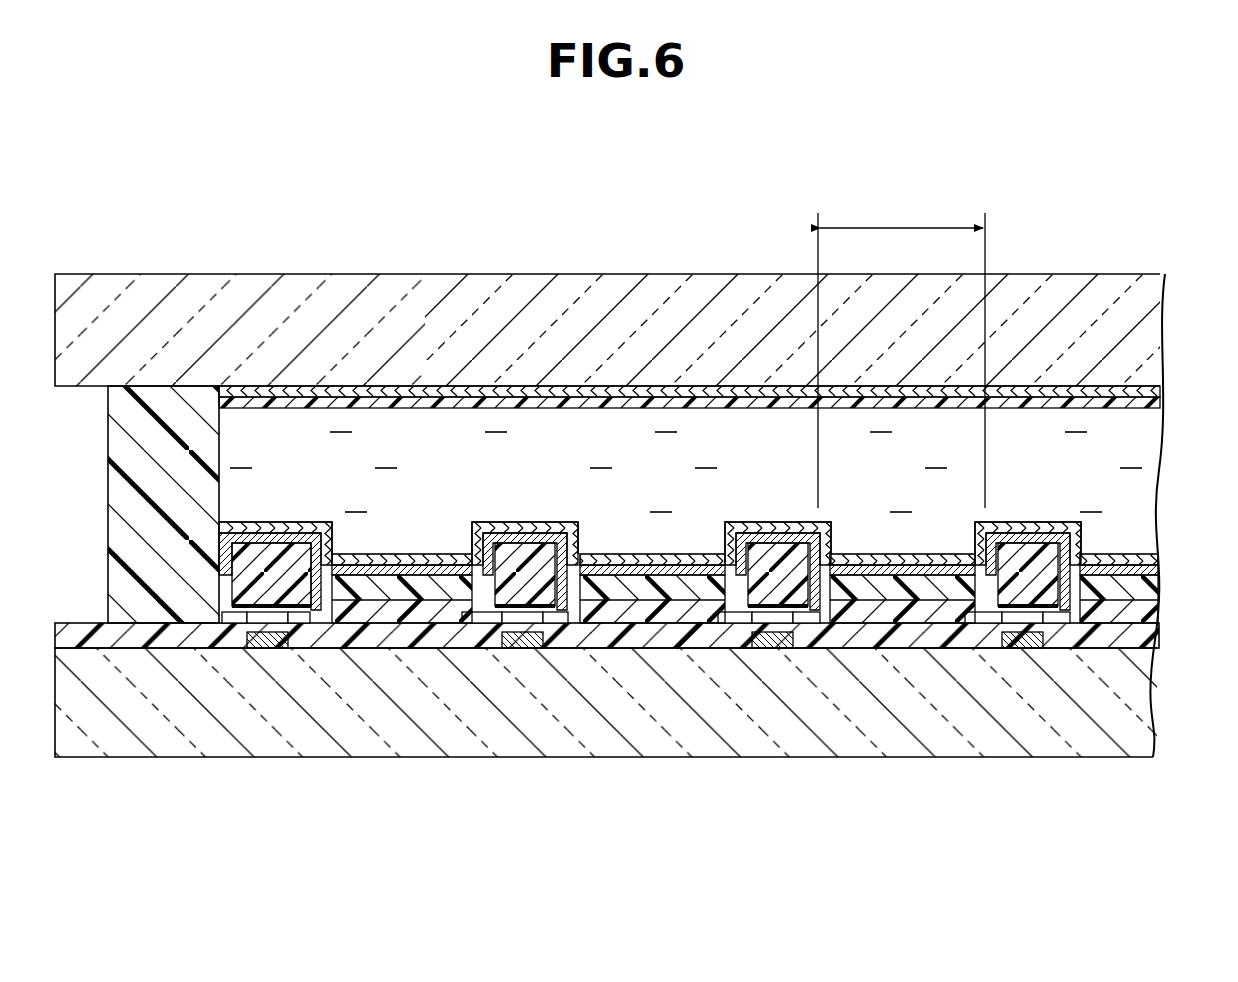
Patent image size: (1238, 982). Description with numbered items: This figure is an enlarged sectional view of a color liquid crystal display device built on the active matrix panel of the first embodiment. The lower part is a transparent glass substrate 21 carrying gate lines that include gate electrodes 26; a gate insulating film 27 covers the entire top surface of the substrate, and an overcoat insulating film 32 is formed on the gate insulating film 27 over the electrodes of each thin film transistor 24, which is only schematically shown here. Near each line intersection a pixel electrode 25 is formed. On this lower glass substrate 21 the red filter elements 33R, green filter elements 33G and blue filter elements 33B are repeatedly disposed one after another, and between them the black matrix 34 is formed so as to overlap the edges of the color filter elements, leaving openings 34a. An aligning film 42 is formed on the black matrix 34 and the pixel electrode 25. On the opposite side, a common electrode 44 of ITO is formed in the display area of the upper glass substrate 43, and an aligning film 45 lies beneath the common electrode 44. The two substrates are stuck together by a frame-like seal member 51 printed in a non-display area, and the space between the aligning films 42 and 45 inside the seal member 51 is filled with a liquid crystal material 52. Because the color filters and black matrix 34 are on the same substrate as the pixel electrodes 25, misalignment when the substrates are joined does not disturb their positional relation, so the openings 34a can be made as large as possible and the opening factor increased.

The glass substrate 21 is at (116, 748).
The thin film transistor 24 is at (312, 634).
The pixel electrode 25 is at (605, 560).
The gate electrode 26 is at (265, 648).
The gate insulating film 27 is at (688, 636).
The overcoat insulating film 32 is at (437, 612).
The red filter element 33R is at (385, 595).
The green filter element 33G is at (597, 598).
The blue filter element 33B is at (893, 598).
The black matrix 34 is at (522, 548).
The opening of the black matrix 34a is at (901, 350).
The aligning film 42 is at (310, 540).
The upper glass substrate 43 is at (145, 300).
The common electrode 44 is at (408, 390).
The aligning film 45 is at (600, 402).
The seal member 51 is at (120, 497).
The liquid crystal material 52 is at (1140, 441).